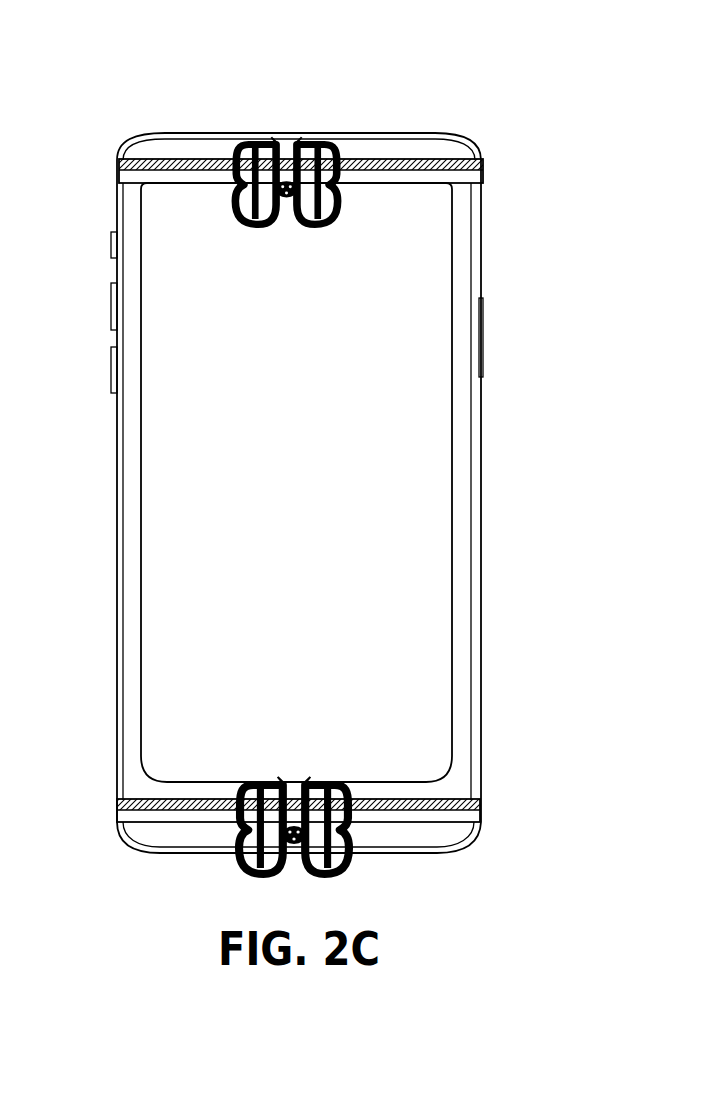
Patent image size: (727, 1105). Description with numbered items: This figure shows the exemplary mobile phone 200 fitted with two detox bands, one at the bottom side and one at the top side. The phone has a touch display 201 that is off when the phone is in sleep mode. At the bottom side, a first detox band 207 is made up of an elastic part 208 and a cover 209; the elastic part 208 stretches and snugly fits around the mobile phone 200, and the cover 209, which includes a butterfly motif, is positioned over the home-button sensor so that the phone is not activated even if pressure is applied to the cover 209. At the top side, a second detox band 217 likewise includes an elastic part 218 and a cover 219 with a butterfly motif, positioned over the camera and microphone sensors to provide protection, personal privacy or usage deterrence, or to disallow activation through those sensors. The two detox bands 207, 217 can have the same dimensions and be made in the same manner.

The mobile phone 200 is at (143, 140).
The touch display 201 is at (417, 512).
The first detox band 207 is at (481, 803).
The elastic part 208 is at (388, 800).
The cover 209 is at (283, 782).
The second detox band 217 is at (484, 163).
The elastic part 218 is at (405, 162).
The cover 219 is at (287, 142).